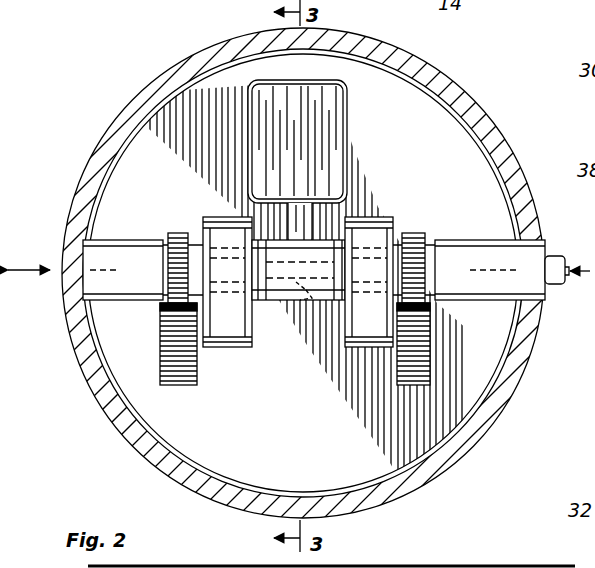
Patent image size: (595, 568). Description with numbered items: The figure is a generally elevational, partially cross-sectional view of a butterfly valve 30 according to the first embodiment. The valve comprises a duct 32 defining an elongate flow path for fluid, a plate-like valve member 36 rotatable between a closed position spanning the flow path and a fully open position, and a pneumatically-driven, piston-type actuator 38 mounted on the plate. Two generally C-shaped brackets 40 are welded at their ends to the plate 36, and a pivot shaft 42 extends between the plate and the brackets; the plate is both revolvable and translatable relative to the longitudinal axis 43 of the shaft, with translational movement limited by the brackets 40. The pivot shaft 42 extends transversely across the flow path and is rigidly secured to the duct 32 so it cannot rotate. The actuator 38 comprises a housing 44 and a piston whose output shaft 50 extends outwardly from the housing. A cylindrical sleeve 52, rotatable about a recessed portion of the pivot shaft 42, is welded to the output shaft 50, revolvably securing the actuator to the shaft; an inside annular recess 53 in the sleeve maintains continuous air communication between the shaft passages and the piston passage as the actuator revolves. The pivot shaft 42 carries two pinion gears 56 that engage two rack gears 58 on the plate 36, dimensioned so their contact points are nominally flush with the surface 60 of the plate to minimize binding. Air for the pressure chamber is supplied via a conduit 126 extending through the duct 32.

The butterfly valve 30 is at (297, 284).
The duct 32 is at (491, 434).
The plate-like valve member 36 is at (450, 432).
The pneumatically-driven piston-type actuator 38 is at (356, 146).
The C-shaped brackets 40 is at (232, 348).
The pivot shaft 42 is at (145, 240).
The longitudinal axis 43 is at (35, 270).
The housing 44 is at (320, 100).
The output shaft 50 is at (300, 201).
The cylindrical sleeve 52 is at (302, 302).
The annular recess 53 is at (312, 305).
The pinion gears 56 is at (412, 232).
The rack gears 58 is at (408, 387).
The surface of the plate 60 is at (440, 128).
The conduit 126 is at (552, 256).